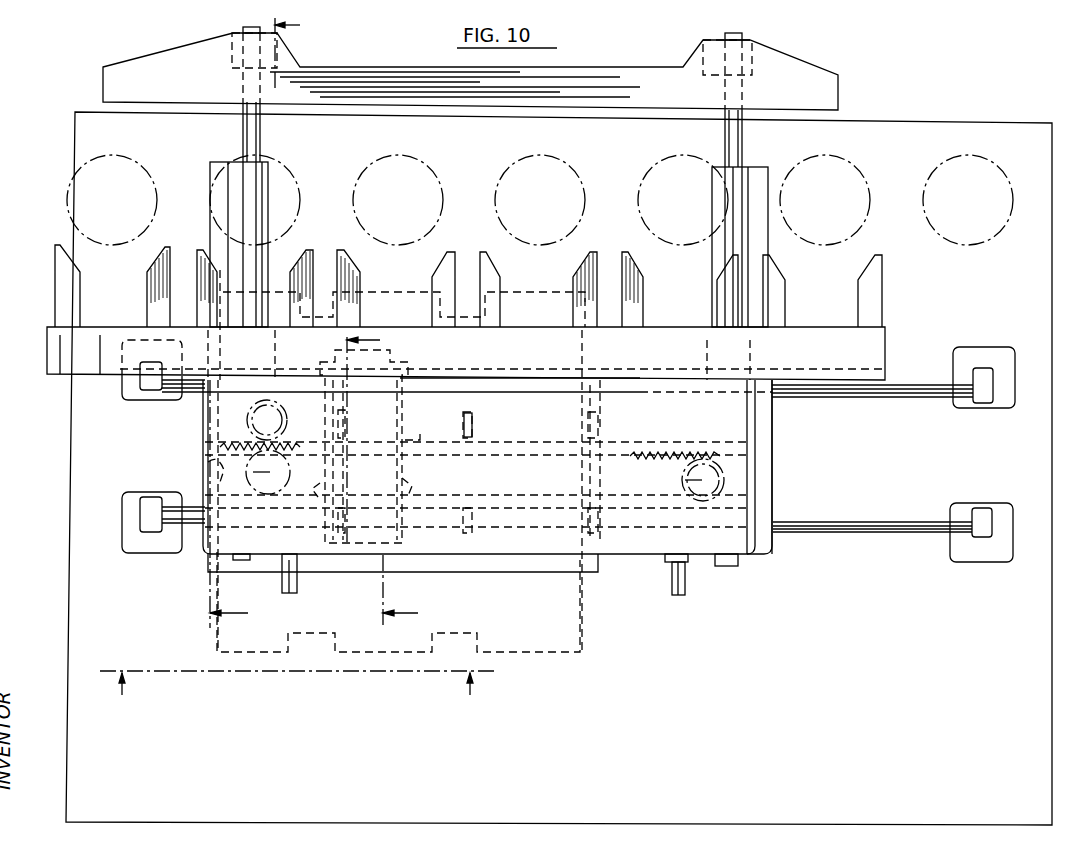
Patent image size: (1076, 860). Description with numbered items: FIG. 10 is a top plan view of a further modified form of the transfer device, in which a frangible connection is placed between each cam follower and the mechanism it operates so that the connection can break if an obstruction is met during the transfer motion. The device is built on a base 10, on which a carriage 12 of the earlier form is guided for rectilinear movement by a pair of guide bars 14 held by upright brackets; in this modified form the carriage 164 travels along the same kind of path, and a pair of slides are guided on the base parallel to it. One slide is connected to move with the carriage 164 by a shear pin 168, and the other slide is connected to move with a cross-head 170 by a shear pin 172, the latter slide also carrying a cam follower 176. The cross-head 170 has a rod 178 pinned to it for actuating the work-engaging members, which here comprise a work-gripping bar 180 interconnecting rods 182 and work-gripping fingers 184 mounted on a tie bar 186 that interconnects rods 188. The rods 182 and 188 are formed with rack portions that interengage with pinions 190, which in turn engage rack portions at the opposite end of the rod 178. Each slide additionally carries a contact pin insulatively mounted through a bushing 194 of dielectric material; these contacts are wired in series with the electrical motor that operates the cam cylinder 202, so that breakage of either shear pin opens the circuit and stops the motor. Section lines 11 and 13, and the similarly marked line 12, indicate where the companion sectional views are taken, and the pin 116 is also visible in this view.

The base 10 is at (66, 544).
The section line 11 is at (298, 695).
The carriage 12 is at (272, 321).
The section line 13 is at (395, 479).
The guide bars 14 is at (917, 383).
The pin 116 is at (472, 427).
The carriage 164 is at (780, 418).
The shear pin 168 is at (208, 463).
The cross-head 170 is at (435, 376).
The shear pin 172 is at (415, 438).
The cam follower 176 is at (320, 483).
The rod 178 is at (683, 452).
The work-gripping bar 180 is at (575, 80).
The rods 182 is at (247, 143).
The work-gripping fingers 184 is at (490, 280).
The tie bar 186 is at (877, 353).
The rods 188 is at (364, 446).
The pinions 190 is at (262, 420).
The bushing 194 is at (204, 483).
The cam cylinder 202 is at (582, 598).